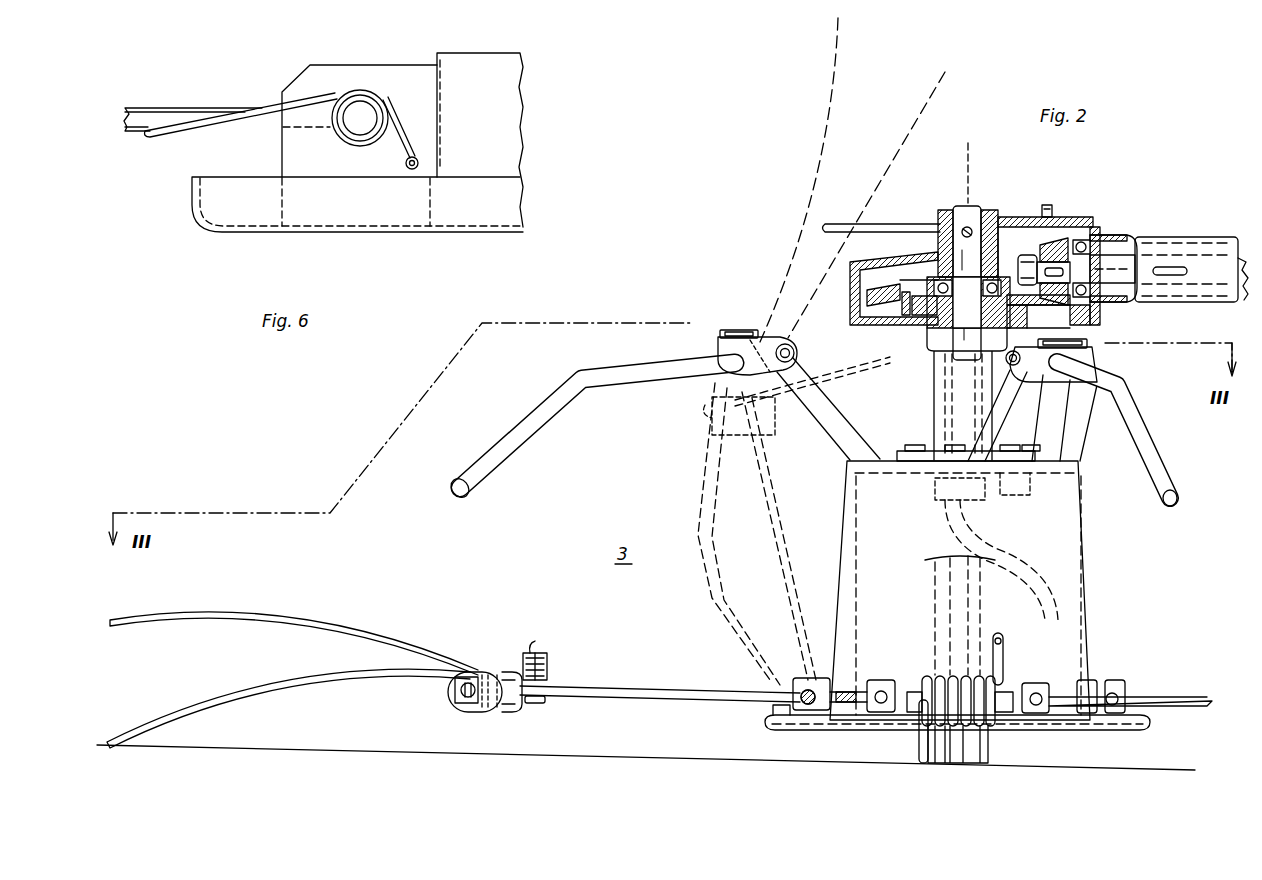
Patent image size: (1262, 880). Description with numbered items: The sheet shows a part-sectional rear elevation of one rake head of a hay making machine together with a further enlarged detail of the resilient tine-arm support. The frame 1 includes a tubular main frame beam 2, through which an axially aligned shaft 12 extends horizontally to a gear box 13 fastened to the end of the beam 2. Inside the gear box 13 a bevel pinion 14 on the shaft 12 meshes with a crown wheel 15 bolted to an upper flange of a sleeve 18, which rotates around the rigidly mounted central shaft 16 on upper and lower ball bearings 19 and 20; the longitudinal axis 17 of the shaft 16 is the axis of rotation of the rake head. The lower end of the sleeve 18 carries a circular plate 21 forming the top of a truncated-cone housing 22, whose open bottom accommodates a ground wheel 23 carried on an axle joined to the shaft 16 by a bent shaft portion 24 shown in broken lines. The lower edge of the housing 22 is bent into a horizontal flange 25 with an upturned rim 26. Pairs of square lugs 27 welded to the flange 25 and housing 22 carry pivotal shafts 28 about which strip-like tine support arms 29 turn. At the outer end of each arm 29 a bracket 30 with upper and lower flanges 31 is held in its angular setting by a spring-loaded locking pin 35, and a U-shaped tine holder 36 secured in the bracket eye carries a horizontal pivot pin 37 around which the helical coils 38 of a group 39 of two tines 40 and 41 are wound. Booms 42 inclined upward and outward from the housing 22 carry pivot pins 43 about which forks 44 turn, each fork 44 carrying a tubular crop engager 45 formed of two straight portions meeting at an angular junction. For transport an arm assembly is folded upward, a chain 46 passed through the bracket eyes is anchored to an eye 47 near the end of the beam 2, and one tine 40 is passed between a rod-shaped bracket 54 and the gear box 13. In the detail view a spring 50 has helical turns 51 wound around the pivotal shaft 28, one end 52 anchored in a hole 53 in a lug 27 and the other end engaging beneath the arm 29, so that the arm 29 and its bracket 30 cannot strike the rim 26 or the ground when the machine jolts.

In FIG. 2, the frame 1 is at (1180, 223).
In FIG. 2, the main frame beam 2 is at (1226, 237).
In FIG. 2, the shaft 12 is at (1246, 298).
In FIG. 2, the gear box 13 is at (1010, 215).
In FIG. 2, the bevel pinion 14 is at (1050, 232).
In FIG. 2, the bevel pinion or crown wheel 15 is at (853, 312).
In FIG. 2, the central shaft 16 is at (955, 205).
In FIG. 2, the longitudinal axis 17 is at (975, 175).
In FIG. 2, the sleeve 18 is at (930, 362).
In FIG. 2, the upper ball bearing 19 is at (1030, 262).
In FIG. 2, the lower ball bearing 20 is at (935, 485).
In FIG. 2, the circular plate 21 is at (1025, 486).
In FIG. 6, the housing 22 is at (523, 100).
In FIG. 2, the housing 22 is at (1088, 598).
In FIG. 2, the ground wheel 23 is at (990, 756).
In FIG. 2, the bent shaft portion 24 is at (962, 540).
In FIG. 6, the flange 25 is at (335, 232).
In FIG. 2, the flange 25 is at (808, 730).
In FIG. 6, the rim 26 is at (192, 186).
In FIG. 2, the rim 26 is at (772, 712).
In FIG. 6, the lug 27 is at (282, 145).
In FIG. 2, the lug 27 is at (790, 728).
In FIG. 6, the pivotal shaft 28 is at (366, 110).
In FIG. 2, the pivotal shaft 28 is at (800, 690).
In FIG. 6, the tine support arm 29 is at (166, 108).
In FIG. 2, the tine support arm 29 is at (675, 690).
In FIG. 2, the bracket 30 is at (512, 714).
In FIG. 2, the flange 31 is at (555, 698).
In FIG. 2, the spring-loaded locking pin 35 is at (540, 646).
In FIG. 2, the tine holder 36 is at (446, 690).
In FIG. 2, the pivot pin 37 is at (468, 706).
In FIG. 2, the helical coil 38 is at (930, 682).
In FIG. 2, the group of tines 39 is at (190, 612).
In FIG. 2, the tine 40 is at (932, 116).
In FIG. 2, the tine 41 is at (825, 127).
In FIG. 2, the boom 42 is at (825, 450).
In FIG. 2, the pivot pin 43 is at (794, 353).
In FIG. 2, the fork 44 is at (716, 348).
In FIG. 2, the crop engager 45 is at (540, 432).
In FIG. 2, the chain 46 is at (855, 385).
In FIG. 2, the eye 47 is at (1175, 276).
In FIG. 6, the spring 50 is at (262, 104).
In FIG. 6, the helical turns 51 is at (342, 142).
In FIG. 6, the spring end 52 is at (410, 136).
In FIG. 6, the hole 53 is at (420, 163).
In FIG. 2, the bracket 54 is at (862, 224).